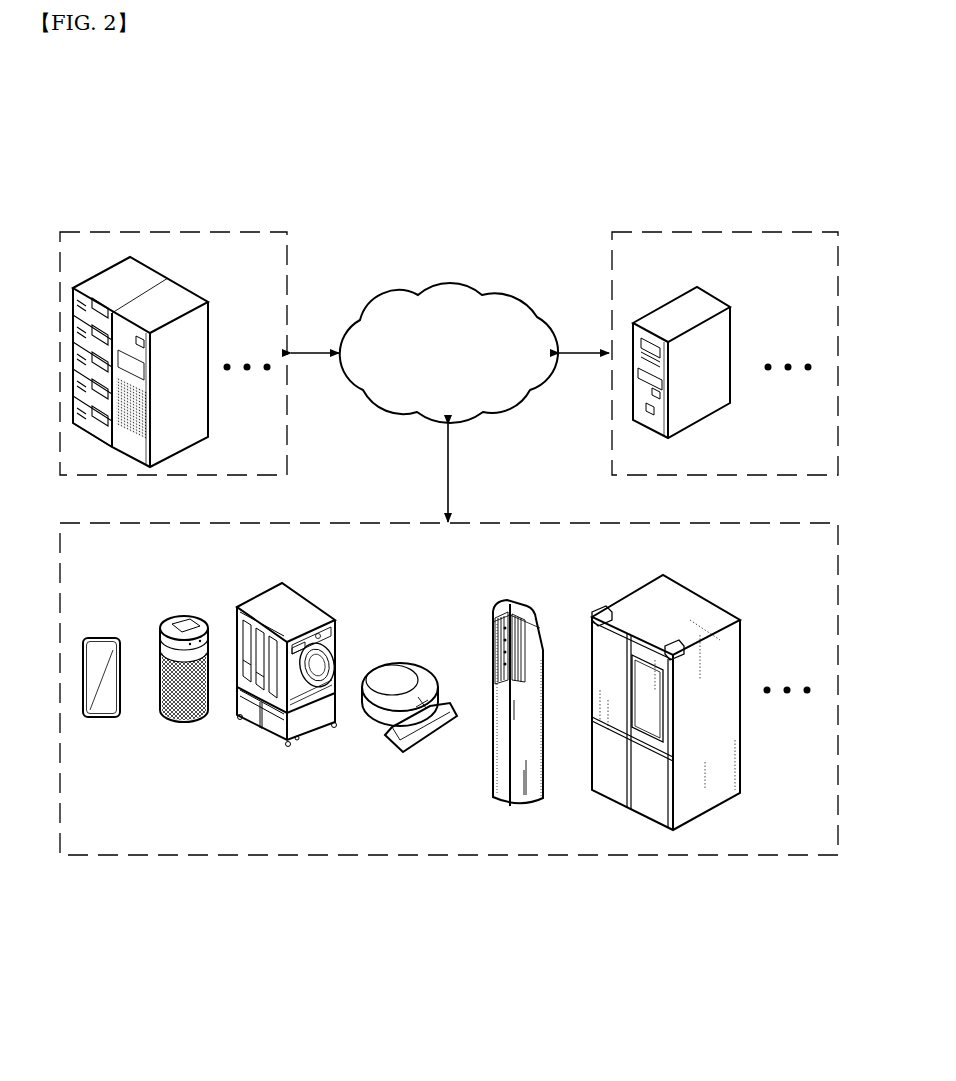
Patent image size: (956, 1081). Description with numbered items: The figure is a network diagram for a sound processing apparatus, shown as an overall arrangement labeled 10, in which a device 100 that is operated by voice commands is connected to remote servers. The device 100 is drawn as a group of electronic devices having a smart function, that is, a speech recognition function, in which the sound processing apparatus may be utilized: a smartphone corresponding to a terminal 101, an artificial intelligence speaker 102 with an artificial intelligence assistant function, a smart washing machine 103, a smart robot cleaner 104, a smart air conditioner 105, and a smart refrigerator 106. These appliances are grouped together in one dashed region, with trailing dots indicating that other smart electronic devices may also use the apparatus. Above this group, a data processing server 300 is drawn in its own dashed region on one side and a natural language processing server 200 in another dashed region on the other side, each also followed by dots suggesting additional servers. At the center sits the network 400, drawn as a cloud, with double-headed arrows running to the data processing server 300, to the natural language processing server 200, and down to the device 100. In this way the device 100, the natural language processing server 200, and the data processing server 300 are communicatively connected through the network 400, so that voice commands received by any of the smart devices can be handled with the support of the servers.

The artificial intelligence system 10 is at (268, 87).
The device 100 is at (637, 856).
The terminal 101 is at (105, 637).
The artificial intelligence speaker 102 is at (181, 612).
The smart washing machine 103 is at (302, 609).
The smart robot cleaner 104 is at (418, 675).
The smart air conditioner 105 is at (514, 607).
The smart refrigerator 106 is at (696, 609).
The natural language processing server 200 is at (738, 232).
The data processing server 300 is at (185, 232).
The network 400 is at (495, 292).